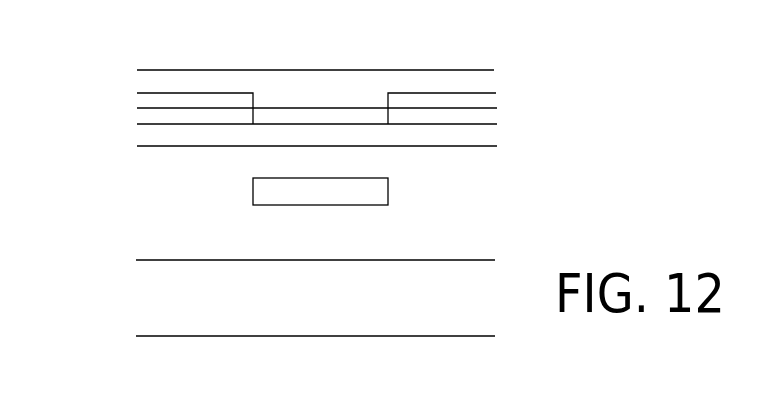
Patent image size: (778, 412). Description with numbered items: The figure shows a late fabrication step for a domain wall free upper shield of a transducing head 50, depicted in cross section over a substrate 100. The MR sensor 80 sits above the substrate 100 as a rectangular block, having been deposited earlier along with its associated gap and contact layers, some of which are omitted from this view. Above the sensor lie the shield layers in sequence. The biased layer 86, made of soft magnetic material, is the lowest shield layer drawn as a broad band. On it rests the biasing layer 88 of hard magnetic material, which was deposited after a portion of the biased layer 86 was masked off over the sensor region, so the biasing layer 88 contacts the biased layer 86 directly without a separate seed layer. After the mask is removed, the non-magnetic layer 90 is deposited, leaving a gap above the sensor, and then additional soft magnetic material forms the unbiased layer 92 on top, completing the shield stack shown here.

The transducing head 50 is at (118, 222).
The MR sensor 80 is at (302, 197).
The biased layer 86 is at (475, 133).
The biasing layer 88 is at (483, 120).
The non-magnetic layer 90 is at (482, 103).
The unbiased layer 92 is at (485, 82).
The substrate 100 is at (438, 308).